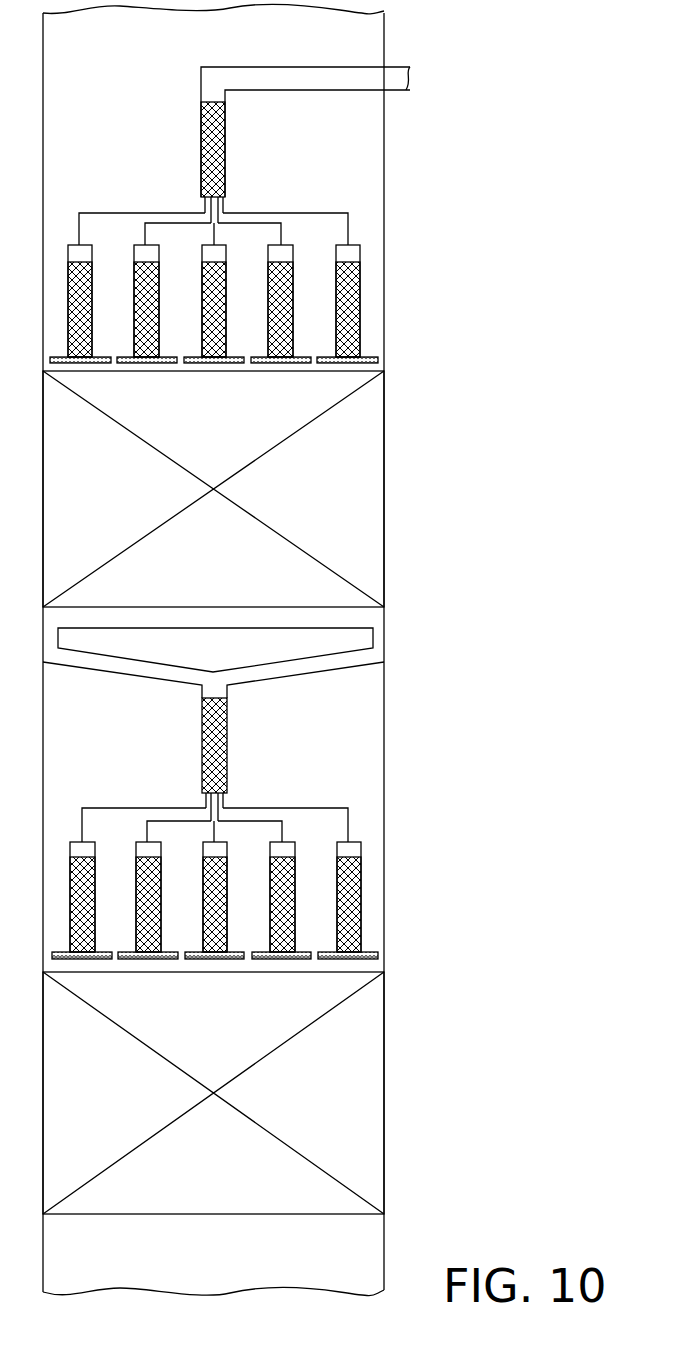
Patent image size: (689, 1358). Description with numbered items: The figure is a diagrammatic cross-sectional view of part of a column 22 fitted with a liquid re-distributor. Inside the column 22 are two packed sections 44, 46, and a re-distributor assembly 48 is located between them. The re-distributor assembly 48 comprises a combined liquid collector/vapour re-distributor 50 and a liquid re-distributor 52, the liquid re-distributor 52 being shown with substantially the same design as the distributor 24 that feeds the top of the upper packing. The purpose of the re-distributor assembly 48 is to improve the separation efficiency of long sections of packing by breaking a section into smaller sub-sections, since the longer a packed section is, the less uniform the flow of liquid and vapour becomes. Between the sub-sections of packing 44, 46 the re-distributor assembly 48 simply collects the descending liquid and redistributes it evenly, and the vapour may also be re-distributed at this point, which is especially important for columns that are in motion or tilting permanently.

The column 22 is at (385, 226).
The distributor 24 is at (364, 167).
The packed section 44 is at (365, 482).
The packed section 46 is at (365, 1080).
The re-distributor assembly 48 is at (315, 786).
The combined liquid collector/vapour re-distributor 50 is at (408, 652).
The liquid re-distributor 52 is at (250, 828).